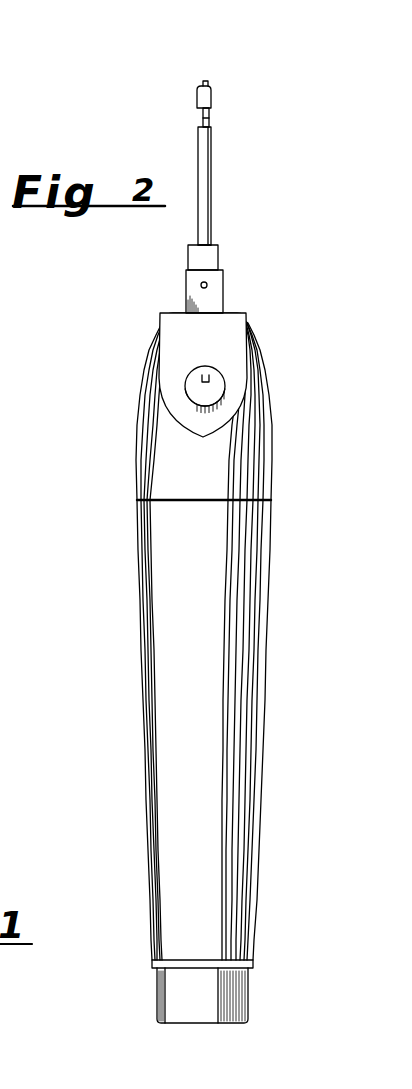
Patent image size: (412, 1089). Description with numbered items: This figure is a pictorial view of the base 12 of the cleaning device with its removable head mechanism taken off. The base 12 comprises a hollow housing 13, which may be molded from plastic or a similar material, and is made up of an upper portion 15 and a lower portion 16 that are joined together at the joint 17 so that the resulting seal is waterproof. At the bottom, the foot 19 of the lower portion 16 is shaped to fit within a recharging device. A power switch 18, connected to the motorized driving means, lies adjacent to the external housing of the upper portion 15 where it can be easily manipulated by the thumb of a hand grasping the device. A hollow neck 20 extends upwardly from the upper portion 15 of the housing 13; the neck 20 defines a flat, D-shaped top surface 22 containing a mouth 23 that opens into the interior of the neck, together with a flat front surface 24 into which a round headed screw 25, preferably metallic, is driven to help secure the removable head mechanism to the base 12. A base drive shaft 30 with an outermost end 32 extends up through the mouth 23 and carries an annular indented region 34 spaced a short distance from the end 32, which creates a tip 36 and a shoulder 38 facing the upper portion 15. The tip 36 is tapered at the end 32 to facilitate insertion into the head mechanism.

The base 12 is at (303, 420).
The hollow housing 13 is at (137, 478).
The upper portion 15 is at (168, 456).
The lower portion 16 is at (182, 650).
The joint 17 is at (271, 500).
The power switch 18 is at (190, 388).
The foot 19 is at (227, 995).
The hollow neck 20 is at (218, 250).
The D-shaped top surface 22 is at (188, 248).
The mouth 23 is at (212, 245).
The flat front surface 24 is at (196, 278).
The round headed screw 25 is at (207, 285).
The base drive shaft 30 is at (212, 183).
The outermost end 32 is at (206, 84).
The annular indented region 34 is at (203, 112).
The tip 36 is at (211, 97).
The shoulder 38 is at (209, 113).